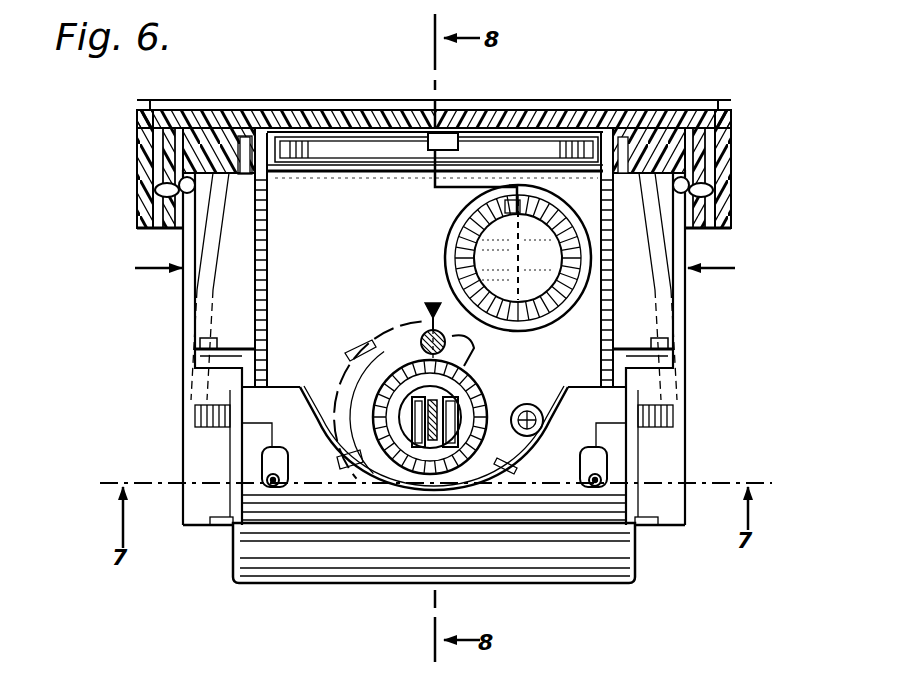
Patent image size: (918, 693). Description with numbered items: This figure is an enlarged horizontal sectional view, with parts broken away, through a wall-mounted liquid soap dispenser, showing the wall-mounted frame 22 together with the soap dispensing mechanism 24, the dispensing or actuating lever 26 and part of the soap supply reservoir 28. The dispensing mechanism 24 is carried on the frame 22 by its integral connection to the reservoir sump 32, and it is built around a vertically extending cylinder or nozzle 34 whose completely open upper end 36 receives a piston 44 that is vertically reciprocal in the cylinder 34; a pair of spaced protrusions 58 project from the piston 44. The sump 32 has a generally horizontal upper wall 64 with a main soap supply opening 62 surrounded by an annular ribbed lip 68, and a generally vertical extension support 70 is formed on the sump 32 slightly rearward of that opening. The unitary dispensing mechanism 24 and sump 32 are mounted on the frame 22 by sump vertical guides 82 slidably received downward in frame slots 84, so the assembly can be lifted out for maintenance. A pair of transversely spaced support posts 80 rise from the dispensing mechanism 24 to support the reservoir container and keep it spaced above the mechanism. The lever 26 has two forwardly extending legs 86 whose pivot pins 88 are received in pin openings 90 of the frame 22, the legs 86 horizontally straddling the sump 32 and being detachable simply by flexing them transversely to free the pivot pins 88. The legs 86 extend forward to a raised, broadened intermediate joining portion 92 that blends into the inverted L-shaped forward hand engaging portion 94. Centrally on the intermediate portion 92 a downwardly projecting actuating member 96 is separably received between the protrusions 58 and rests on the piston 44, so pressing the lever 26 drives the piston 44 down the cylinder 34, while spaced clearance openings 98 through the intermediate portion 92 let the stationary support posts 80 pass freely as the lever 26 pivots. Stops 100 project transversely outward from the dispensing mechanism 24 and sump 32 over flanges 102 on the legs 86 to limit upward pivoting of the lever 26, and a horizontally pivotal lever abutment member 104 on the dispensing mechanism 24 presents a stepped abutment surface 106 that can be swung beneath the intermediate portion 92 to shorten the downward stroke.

The wall-mounted frame 22 is at (134, 155).
The soap dispensing mechanism 24 is at (546, 478).
The dispensing or actuating lever 26 is at (278, 589).
The soap supply reservoir 28 is at (322, 194).
The reservoir sump 32 is at (323, 233).
The cylinder or nozzle 34 is at (434, 445).
The open upper end 36 is at (470, 403).
The piston 44 is at (393, 405).
The spaced protrusions 58 is at (440, 450).
The main soap supply opening 62 is at (507, 243).
The upper wall 64 is at (370, 198).
The annular ribbed lip 68 is at (470, 244).
The vertical extension support 70 is at (290, 112).
The support posts 80 is at (233, 526).
The sump vertical guides 82 is at (242, 115).
The frame slots 84 is at (215, 140).
The lever legs 86 is at (188, 243).
The pivot pins 88 is at (156, 188).
The pin openings 90 is at (180, 192).
The intermediate joining portion 92 is at (263, 405).
The forward hand engaging portion 94 is at (252, 562).
The actuating member 96 is at (403, 343).
The pivot boss 98 is at (275, 457).
The stops 100 is at (200, 357).
The flanges 102 is at (205, 340).
The lever abutment member 104 is at (423, 327).
The stepped abutment surface 106 is at (370, 353).